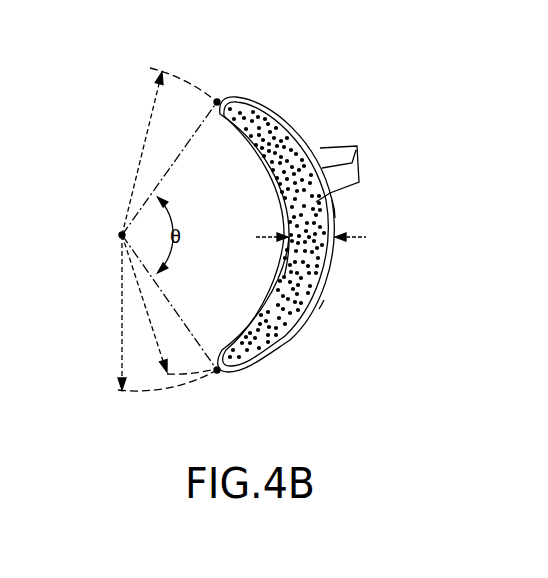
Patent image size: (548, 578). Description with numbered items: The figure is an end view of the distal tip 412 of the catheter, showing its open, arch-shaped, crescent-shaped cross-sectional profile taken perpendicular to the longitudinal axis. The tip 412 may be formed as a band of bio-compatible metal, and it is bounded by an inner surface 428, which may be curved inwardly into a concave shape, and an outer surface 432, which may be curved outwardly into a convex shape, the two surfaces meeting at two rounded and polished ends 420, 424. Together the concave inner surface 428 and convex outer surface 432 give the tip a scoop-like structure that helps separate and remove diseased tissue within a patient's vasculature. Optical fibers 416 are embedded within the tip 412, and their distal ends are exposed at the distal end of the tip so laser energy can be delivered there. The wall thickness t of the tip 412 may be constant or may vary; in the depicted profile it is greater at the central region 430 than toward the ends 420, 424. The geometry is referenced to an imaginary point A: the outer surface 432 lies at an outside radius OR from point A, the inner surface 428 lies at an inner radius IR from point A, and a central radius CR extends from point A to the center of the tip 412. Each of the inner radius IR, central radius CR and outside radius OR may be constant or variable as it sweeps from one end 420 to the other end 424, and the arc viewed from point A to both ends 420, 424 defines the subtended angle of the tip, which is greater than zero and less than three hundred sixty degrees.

The tip 412 is at (318, 98).
The optical fibers 416 is at (352, 159).
The end 420 is at (217, 104).
The end 424 is at (217, 372).
The inner surface 428 is at (288, 265).
The central region 430 is at (333, 217).
The outer surface 432 is at (320, 308).
The imaginary point A is at (120, 237).
The outside radius OR is at (169, 151).
The central radius CR is at (162, 313).
The inner radius IR is at (168, 304).
The thickness t is at (317, 238).